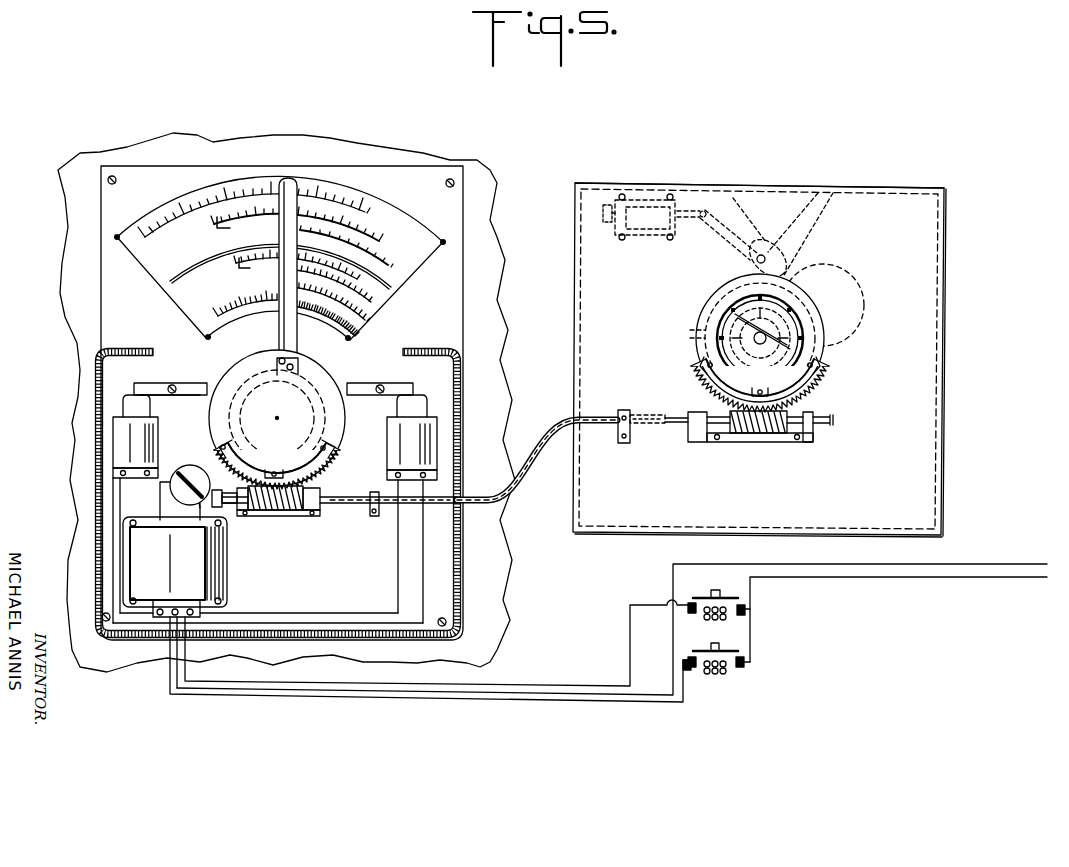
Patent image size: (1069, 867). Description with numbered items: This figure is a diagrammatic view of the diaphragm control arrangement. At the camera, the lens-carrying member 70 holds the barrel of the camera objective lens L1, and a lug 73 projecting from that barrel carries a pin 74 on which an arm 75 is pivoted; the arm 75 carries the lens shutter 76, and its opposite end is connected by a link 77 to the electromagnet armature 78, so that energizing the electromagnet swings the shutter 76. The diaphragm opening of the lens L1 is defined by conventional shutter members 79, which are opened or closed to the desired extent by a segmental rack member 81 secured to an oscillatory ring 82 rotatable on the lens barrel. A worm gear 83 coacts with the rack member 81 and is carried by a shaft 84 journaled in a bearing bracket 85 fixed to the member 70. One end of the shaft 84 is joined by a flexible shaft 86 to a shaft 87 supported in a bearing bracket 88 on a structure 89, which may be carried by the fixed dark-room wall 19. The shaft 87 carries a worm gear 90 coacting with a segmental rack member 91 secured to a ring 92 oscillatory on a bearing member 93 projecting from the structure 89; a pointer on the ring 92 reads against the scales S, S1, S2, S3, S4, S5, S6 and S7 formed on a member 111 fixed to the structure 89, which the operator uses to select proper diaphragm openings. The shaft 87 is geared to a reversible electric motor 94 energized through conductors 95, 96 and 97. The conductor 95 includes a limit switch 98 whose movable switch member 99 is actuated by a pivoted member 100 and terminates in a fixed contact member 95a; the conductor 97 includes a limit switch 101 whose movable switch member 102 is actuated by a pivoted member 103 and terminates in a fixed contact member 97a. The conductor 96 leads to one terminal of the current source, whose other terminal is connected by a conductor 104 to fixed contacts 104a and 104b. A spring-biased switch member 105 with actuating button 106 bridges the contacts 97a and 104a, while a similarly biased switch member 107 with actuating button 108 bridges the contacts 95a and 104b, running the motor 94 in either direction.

The fixed opaque wall 19 is at (77, 325).
The structure 89 is at (112, 280).
The scale member 111 is at (118, 242).
The scale S is at (365, 212).
The scale S1 is at (379, 241).
The scale S2 is at (388, 265).
The scale S3 is at (389, 289).
The scale S4 is at (357, 279).
The scale S5 is at (371, 302).
The scale S6 is at (365, 320).
The scale S7 is at (350, 340).
The pivoted member 100 is at (193, 392).
The pivoted member 103 is at (358, 392).
The movable switch member 99 is at (135, 405).
The limit switch 98 is at (125, 420).
The limit switch 101 is at (418, 405).
The ring 92 is at (346, 418).
The bearing member 93 is at (235, 412).
The segmental rack member 91 is at (328, 466).
The shaft 87 is at (240, 516).
The bearing bracket 88 is at (318, 516).
The worm gear 90 is at (278, 516).
The reversible electric motor 94 is at (150, 575).
The conductor 95 is at (96, 500).
The conductor 97 is at (455, 557).
The conductor 96 is at (673, 640).
The movable switch member 102 is at (460, 372).
The lens-carrying member 70 is at (930, 404).
The lug 73 is at (845, 186).
The electromagnet armature 78 is at (678, 195).
The link 77 is at (704, 210).
The arm 75 is at (740, 200).
The pin 74 is at (764, 256).
The lens shutter 76 is at (846, 271).
The oscillatory ring 82 is at (824, 338).
The camera objective lens L1 is at (758, 334).
The shutter members 79 is at (690, 333).
The segmental rack member 81 is at (820, 400).
The shaft 84 is at (745, 440).
The bearing bracket 85 is at (695, 445).
The worm gear 83 is at (775, 434).
The flexible shaft 86 is at (630, 412).
The conductor 104 is at (962, 590).
The fixed contact member 97a is at (691, 603).
The switch member 105 is at (735, 598).
The actuating button 106 is at (716, 590).
The fixed contact 104a is at (745, 612).
The switch member 107 is at (691, 657).
The actuating button 108 is at (725, 650).
The fixed contact 104b is at (748, 655).
The fixed contact member 95a is at (690, 670).